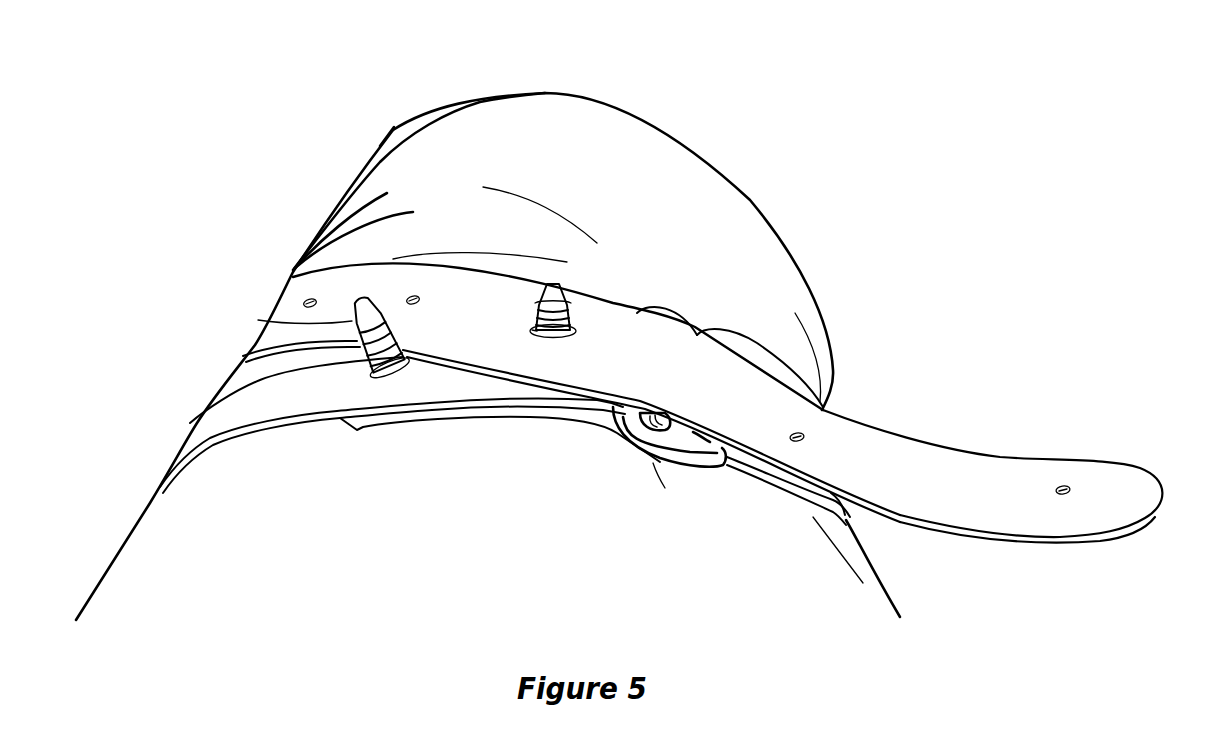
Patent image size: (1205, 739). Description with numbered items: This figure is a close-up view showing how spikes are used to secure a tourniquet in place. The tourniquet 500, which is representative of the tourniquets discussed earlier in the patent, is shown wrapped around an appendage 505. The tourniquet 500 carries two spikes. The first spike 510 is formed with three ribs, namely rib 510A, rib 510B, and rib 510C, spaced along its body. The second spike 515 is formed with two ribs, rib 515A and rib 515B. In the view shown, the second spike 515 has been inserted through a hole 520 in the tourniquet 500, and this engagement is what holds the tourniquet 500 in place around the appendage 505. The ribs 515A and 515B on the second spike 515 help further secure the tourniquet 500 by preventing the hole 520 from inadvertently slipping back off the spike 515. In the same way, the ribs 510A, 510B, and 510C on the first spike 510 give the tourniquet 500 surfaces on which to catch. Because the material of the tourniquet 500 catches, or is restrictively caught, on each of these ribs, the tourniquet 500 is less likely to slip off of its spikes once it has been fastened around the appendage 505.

The tourniquet 500 is at (1000, 457).
The appendage 505 is at (583, 124).
The first spike 510 is at (293, 272).
The rib 510A is at (258, 320).
The rib 510B is at (243, 356).
The rib 510C is at (190, 423).
The second spike 515 is at (700, 216).
The rib 515A is at (587, 307).
The rib 515B is at (587, 315).
The hole 520 is at (537, 331).